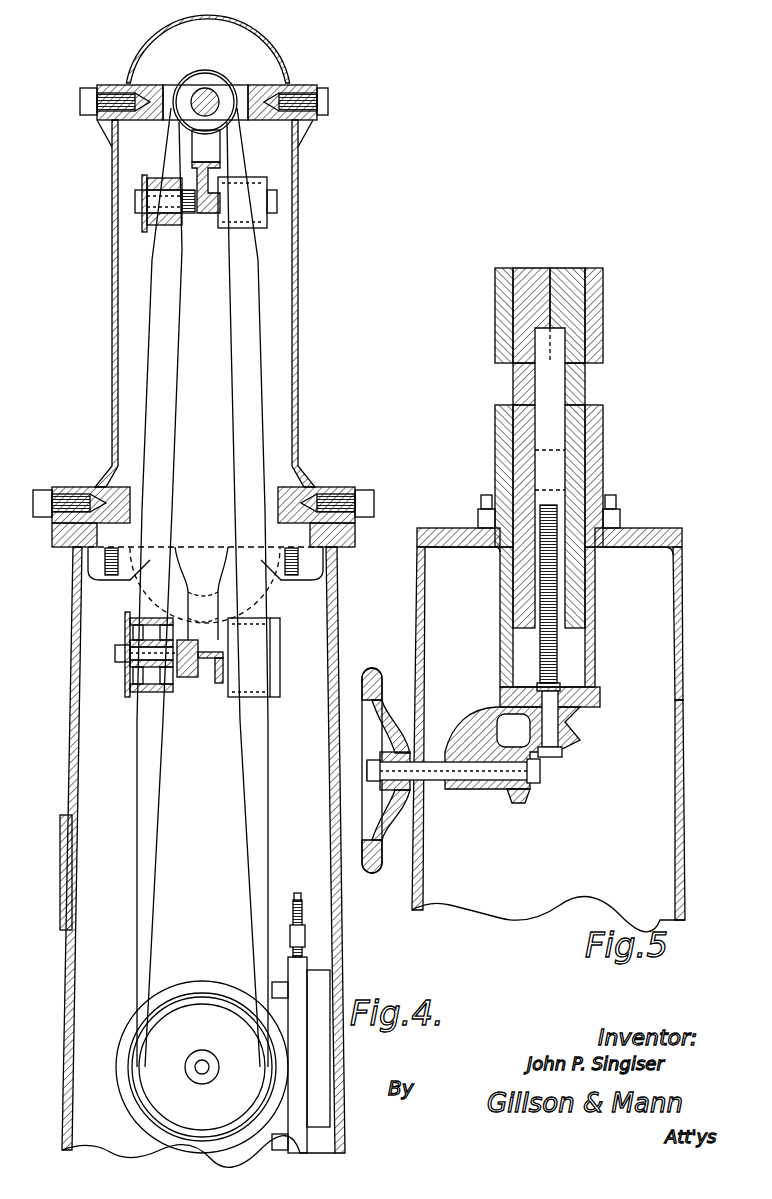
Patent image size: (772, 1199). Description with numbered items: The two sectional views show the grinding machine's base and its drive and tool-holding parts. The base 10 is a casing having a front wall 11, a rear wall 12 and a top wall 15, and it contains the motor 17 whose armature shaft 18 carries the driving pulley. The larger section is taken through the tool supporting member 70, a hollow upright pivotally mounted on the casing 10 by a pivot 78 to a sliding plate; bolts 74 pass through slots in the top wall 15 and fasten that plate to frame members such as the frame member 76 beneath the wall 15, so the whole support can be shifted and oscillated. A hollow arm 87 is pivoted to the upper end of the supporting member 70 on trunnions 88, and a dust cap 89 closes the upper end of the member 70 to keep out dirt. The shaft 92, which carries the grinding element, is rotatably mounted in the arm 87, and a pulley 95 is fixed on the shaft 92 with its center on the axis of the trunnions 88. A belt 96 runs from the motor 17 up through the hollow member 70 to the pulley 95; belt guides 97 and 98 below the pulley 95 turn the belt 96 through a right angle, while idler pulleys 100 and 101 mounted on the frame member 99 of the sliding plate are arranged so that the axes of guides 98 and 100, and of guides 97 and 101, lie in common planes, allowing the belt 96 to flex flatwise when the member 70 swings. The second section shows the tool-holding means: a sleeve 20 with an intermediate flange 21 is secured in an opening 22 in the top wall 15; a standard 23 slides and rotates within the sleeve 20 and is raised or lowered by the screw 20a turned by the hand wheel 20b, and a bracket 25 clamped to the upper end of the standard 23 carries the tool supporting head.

In FIG. 5, the base 10 is at (680, 622).
In FIG. 4, the front wall 11 is at (73, 731).
In FIG. 5, the front wall 11 is at (419, 646).
In FIG. 4, the rear wall 12 is at (336, 652).
In FIG. 5, the rear wall 12 is at (682, 688).
In FIG. 4, the top wall 15 is at (334, 548).
In FIG. 5, the top wall 15 is at (448, 528).
In FIG. 4, the motor 17 is at (199, 982).
In FIG. 4, the armature shaft 18 is at (196, 1061).
In FIG. 5, the sleeve 20 is at (606, 472).
In FIG. 5, the screw 20a is at (597, 431).
In FIG. 5, the hand wheel 20b is at (378, 870).
In FIG. 5, the flange 21 is at (620, 521).
In FIG. 5, the opening 22 is at (612, 549).
In FIG. 5, the standard 23 is at (512, 384).
In FIG. 5, the bracket 25 is at (604, 331).
In FIG. 4, the tool supporting member 70 is at (298, 342).
In FIG. 4, the bolts 74 is at (130, 577).
In FIG. 4, the frame member 76 is at (313, 572).
In FIG. 4, the pivot 78 is at (108, 484).
In FIG. 4, the hollow arm 87 is at (260, 83).
In FIG. 4, the trunnions 88 is at (140, 98).
In FIG. 4, the dust cap 89 is at (263, 43).
In FIG. 4, the shaft 92 is at (204, 100).
In FIG. 4, the pulley 95 is at (210, 80).
In FIG. 4, the belt 96 is at (253, 320).
In FIG. 4, the belt guide 97 is at (275, 222).
In FIG. 4, the belt guide 98 is at (143, 227).
In FIG. 4, the frame member 99 is at (204, 682).
In FIG. 4, the idler pulley 100 is at (133, 697).
In FIG. 4, the idler pulley 101 is at (275, 697).